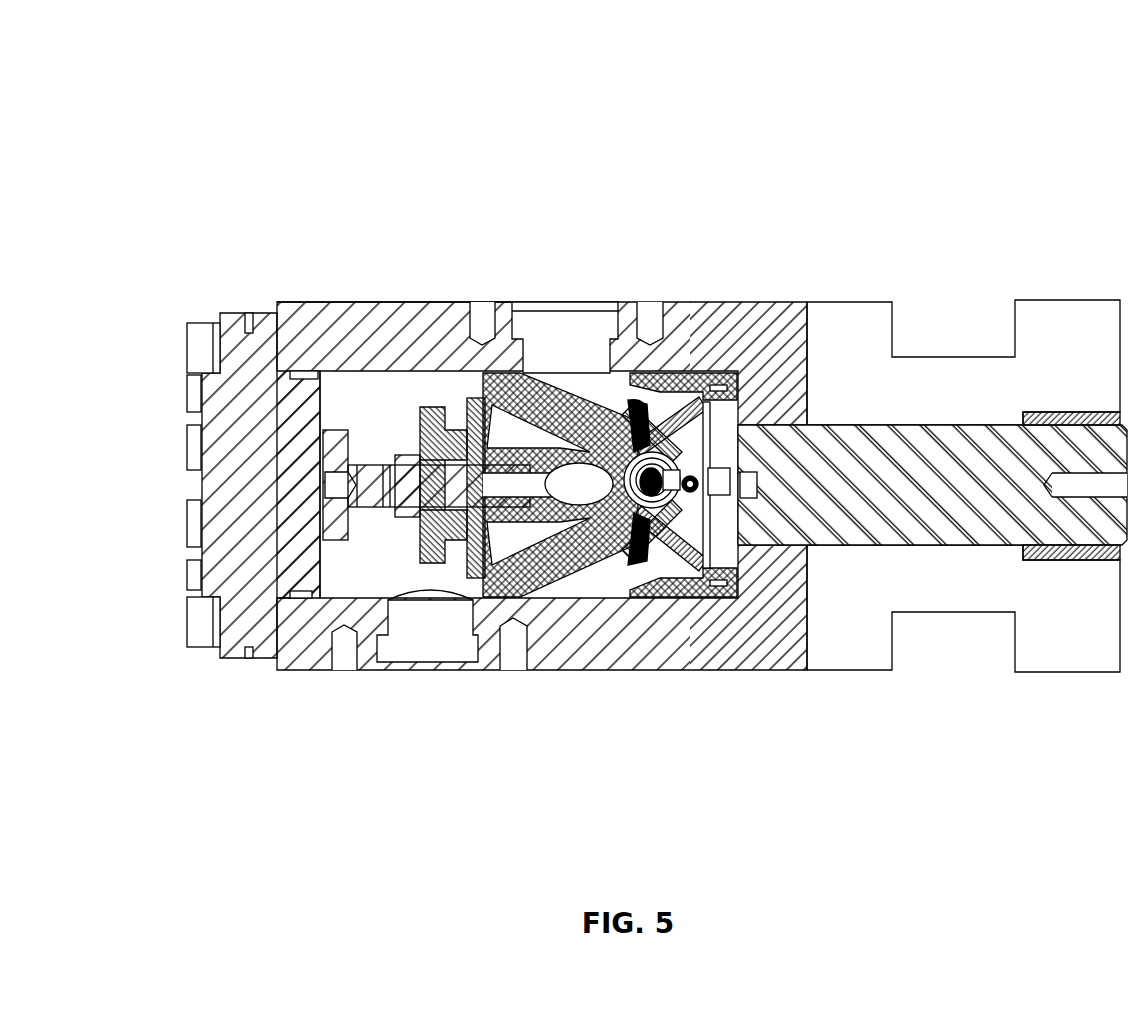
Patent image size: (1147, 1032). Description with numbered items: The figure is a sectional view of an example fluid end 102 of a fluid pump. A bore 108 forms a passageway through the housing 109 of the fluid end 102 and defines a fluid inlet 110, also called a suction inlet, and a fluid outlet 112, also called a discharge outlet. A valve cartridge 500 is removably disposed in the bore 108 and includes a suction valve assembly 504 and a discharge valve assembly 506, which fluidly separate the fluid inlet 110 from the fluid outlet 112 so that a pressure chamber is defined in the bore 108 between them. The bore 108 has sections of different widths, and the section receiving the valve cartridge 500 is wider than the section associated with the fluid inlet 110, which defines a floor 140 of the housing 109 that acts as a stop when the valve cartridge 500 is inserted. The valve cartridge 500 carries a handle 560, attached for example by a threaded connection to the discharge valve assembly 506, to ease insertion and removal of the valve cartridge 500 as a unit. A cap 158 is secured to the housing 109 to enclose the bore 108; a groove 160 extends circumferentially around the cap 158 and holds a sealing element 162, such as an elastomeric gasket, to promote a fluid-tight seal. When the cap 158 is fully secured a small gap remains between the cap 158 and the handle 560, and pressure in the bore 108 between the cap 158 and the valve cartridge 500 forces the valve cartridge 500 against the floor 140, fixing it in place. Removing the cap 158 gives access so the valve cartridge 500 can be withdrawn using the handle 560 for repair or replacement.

The fluid end 102 is at (135, 36).
The bore 108 is at (393, 398).
The housing 109 is at (300, 310).
The fluid inlet 110 is at (564, 350).
The fluid outlet 112 is at (428, 622).
The floor 140 is at (742, 426).
The cap 158 is at (280, 492).
The groove 160 is at (298, 591).
The sealing element 162 is at (290, 595).
The valve cartridge 500 is at (594, 574).
The suction valve assembly 504 is at (628, 404).
The discharge valve assembly 506 is at (396, 538).
The handle 560 is at (340, 430).